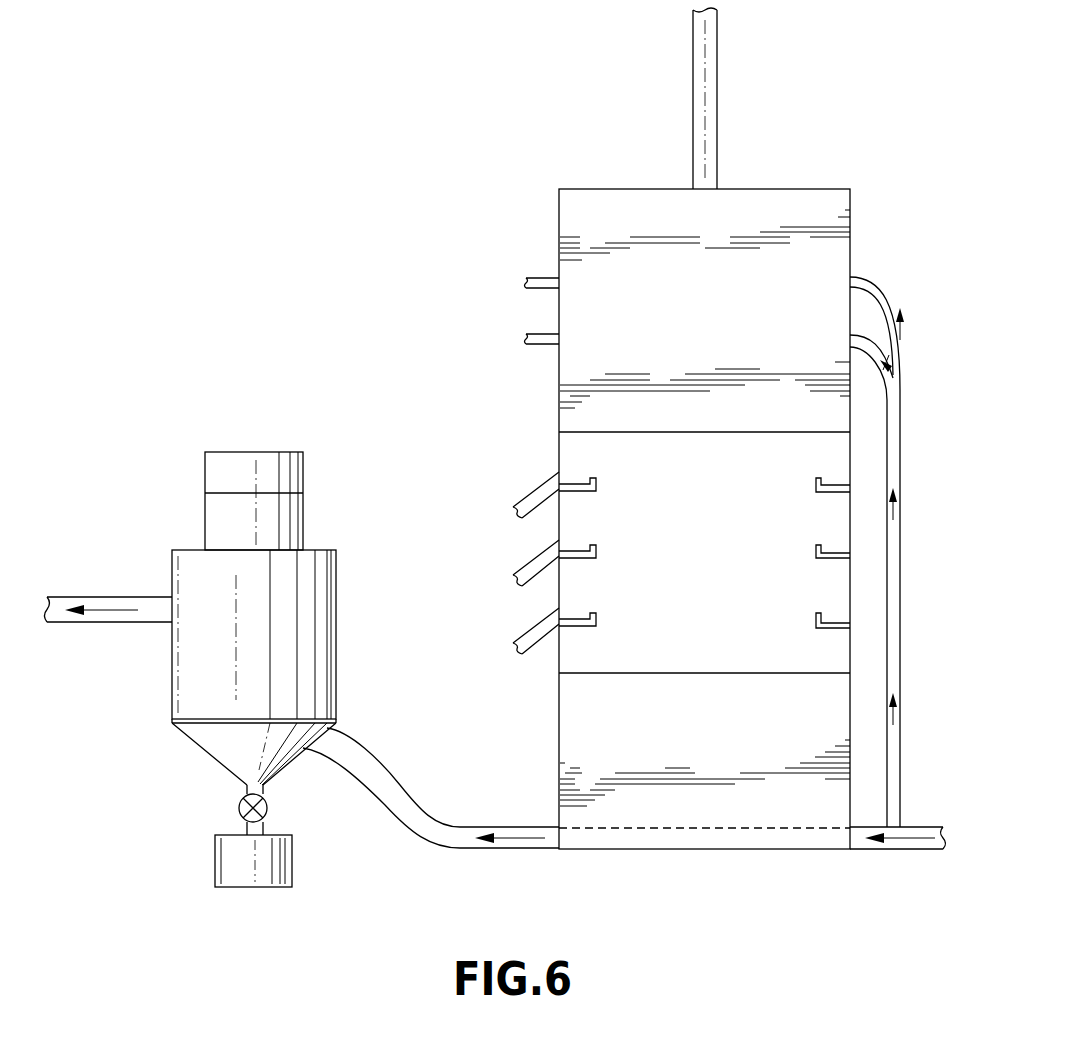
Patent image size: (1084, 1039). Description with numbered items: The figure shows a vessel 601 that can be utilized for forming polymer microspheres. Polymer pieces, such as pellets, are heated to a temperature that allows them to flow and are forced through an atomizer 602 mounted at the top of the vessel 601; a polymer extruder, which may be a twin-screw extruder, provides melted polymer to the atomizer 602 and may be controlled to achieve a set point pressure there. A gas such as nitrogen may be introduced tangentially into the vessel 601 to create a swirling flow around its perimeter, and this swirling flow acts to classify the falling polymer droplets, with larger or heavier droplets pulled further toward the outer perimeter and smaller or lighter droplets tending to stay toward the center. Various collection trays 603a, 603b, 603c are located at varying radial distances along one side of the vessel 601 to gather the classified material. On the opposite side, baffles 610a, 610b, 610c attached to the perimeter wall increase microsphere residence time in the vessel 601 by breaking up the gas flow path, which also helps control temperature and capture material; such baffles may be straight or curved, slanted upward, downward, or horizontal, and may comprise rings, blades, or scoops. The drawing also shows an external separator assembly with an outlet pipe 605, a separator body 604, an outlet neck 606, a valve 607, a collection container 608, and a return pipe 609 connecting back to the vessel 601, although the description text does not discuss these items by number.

The vessel 601 is at (559, 230).
The atomizer 602 is at (693, 145).
The collection tray 603a is at (575, 483).
The collection tray 603b is at (577, 550).
The collection tray 603c is at (577, 618).
The cyclone separator 604 is at (336, 680).
The gas outlet pipe 605 is at (130, 597).
The cyclone outlet neck 606 is at (247, 788).
The valve 607 is at (238, 808).
The collection container 608 is at (226, 862).
The return pipe 609 is at (898, 758).
The baffle 610a is at (833, 480).
The baffle 610b is at (833, 540).
The baffle 610c is at (833, 611).